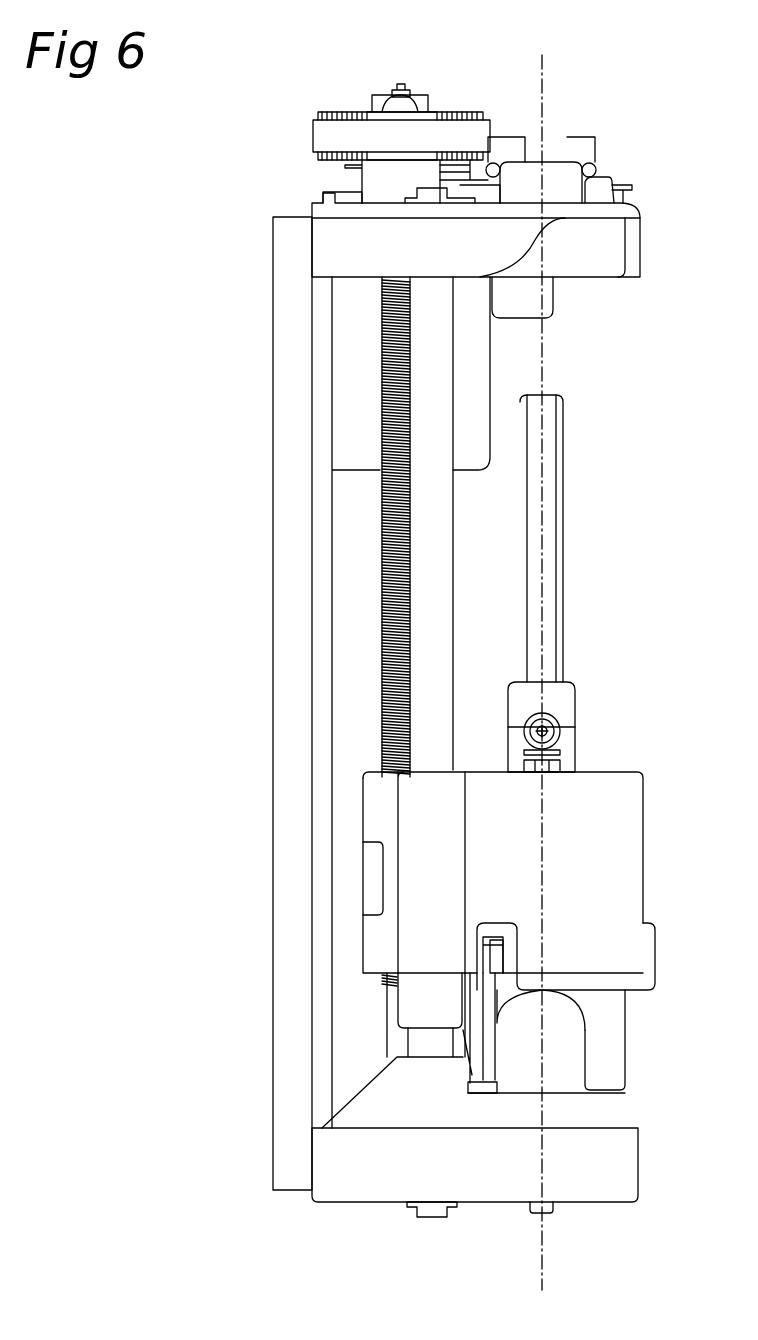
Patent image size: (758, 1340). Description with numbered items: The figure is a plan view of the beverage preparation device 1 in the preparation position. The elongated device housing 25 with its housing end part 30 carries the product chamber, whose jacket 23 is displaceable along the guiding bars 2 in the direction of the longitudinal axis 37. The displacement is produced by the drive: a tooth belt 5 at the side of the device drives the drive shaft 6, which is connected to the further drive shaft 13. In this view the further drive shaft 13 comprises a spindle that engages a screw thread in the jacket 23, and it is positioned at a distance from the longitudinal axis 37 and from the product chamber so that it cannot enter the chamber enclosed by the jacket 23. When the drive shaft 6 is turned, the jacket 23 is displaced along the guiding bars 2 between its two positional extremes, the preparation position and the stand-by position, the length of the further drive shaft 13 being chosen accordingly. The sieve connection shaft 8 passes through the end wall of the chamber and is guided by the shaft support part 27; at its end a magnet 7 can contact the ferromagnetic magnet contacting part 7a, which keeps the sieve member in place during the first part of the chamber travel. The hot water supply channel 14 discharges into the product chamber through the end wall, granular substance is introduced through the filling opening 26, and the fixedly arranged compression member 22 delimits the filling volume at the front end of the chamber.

The beverage preparation device 1 is at (255, 222).
The longitudinal guides 2 is at (423, 668).
The tooth belt 5 is at (327, 133).
The drive shaft 6 is at (404, 90).
The magnet 7 is at (548, 404).
The magnet contacting part 7a is at (550, 178).
The sieve connection shaft 8 is at (548, 536).
The further drive shaft 13 is at (383, 590).
The hot water supply channel 14 is at (555, 733).
The compression member 22 is at (598, 1107).
The jacket 23 is at (615, 860).
The device housing 25 is at (327, 1212).
The filling opening 26 is at (497, 960).
The shaft support part 27 is at (553, 697).
The housing end part 30 is at (565, 762).
The longitudinal axis 37 is at (542, 1226).